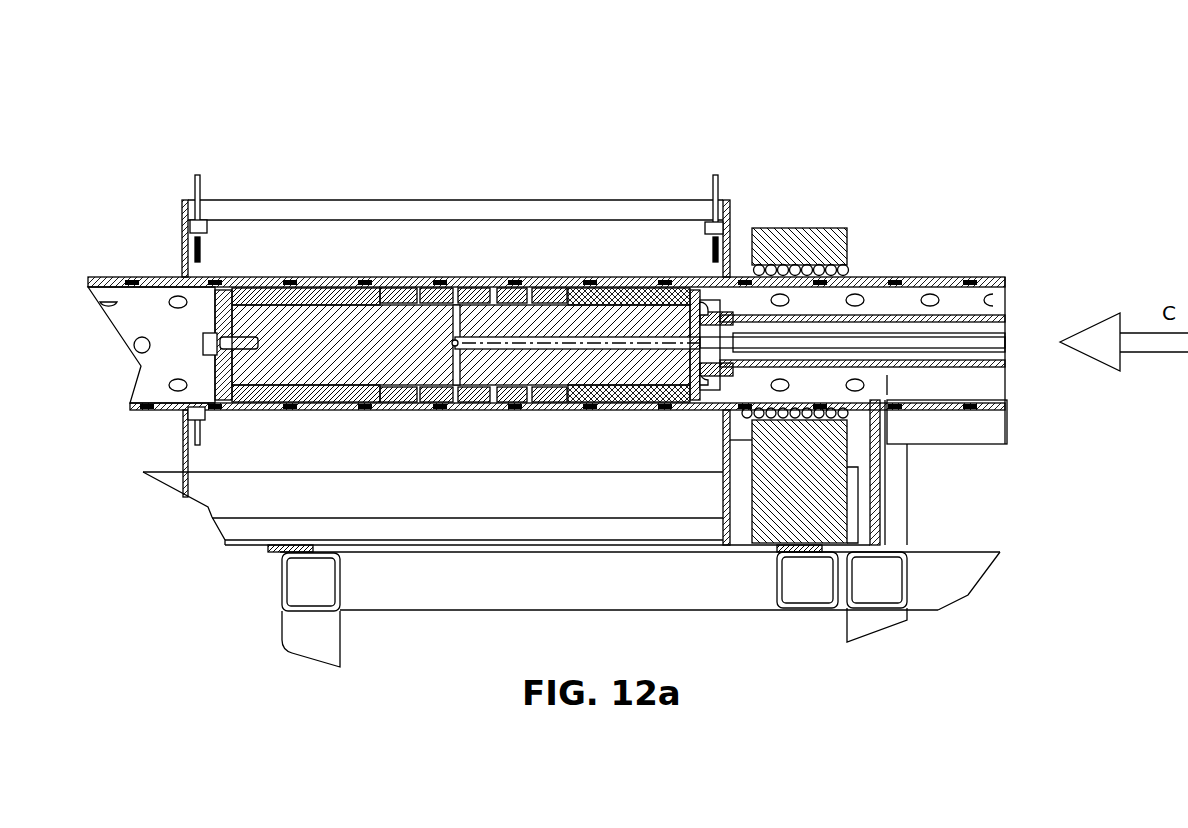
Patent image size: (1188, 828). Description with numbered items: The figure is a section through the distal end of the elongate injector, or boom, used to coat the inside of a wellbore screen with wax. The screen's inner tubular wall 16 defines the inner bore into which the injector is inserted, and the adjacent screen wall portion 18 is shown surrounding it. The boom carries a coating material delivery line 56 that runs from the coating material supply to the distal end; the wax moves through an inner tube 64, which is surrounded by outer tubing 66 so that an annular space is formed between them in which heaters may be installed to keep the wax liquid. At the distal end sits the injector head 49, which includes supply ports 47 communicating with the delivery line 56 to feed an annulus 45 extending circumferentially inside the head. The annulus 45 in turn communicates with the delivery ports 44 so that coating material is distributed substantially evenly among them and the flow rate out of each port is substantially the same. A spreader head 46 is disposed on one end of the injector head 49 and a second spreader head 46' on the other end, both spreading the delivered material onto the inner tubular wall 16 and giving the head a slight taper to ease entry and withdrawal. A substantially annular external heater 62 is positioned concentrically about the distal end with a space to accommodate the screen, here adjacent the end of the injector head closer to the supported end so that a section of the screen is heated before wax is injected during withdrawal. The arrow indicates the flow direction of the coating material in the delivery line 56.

The wellbore screen inner tubular wall 16 is at (121, 271).
The tube wall 18 is at (540, 212).
The spreader head 46 is at (235, 270).
The injector head 49 is at (358, 330).
The delivery port 44 is at (420, 288).
The supply ports 47 is at (545, 290).
The second spreader head 46' is at (684, 250).
The external heater 62 is at (824, 205).
The outer tubing 66 is at (885, 289).
The inner tube 64 is at (895, 292).
The coating material delivery line 56 is at (884, 373).
The annulus 45 is at (400, 407).